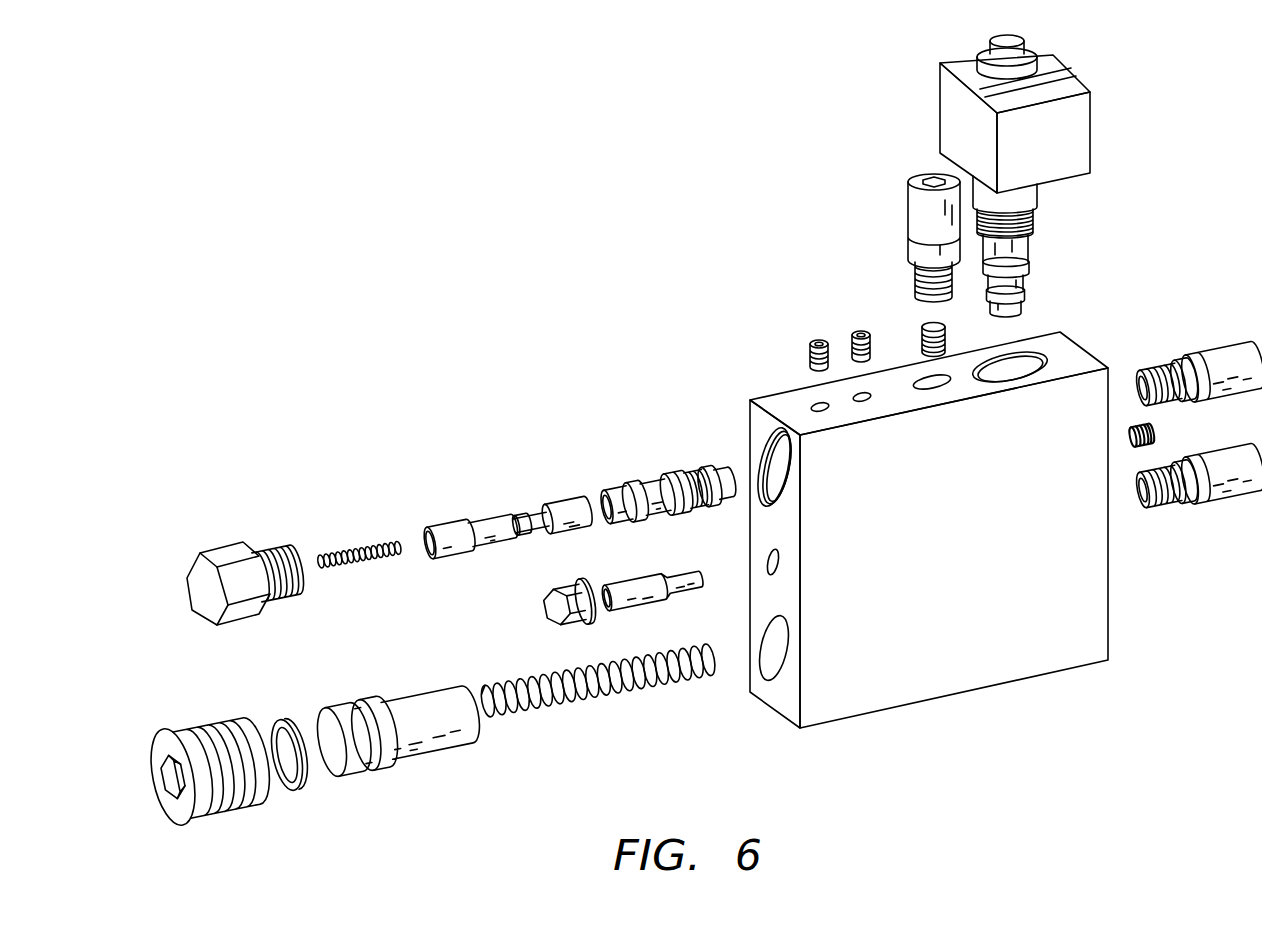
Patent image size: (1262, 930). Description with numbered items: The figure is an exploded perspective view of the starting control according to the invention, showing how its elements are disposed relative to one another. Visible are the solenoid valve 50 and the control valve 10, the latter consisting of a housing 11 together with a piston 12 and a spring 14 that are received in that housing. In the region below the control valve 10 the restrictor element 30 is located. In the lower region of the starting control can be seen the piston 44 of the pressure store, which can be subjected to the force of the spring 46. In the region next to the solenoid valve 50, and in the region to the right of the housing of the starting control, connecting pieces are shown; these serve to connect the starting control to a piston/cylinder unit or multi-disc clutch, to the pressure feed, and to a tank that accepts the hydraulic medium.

The control valve 10 is at (554, 392).
The housing 11 is at (655, 478).
The piston 12 is at (492, 523).
The spring 14 is at (353, 553).
The restrictor element 30 is at (632, 578).
The piston 44 is at (382, 772).
The spring 46 is at (553, 713).
The solenoid valve 50 is at (1077, 138).